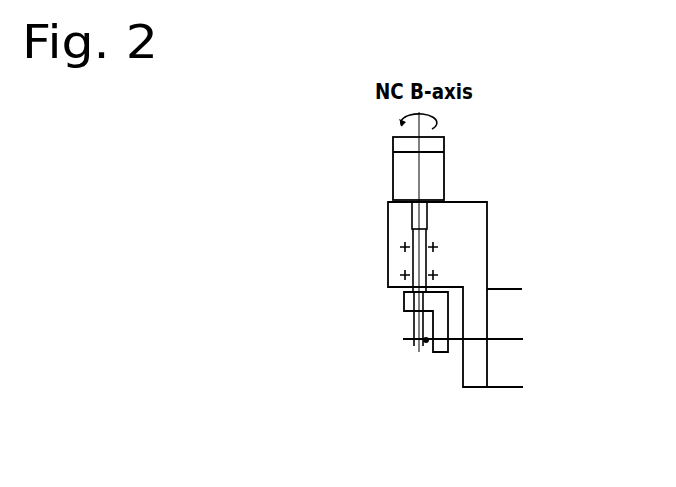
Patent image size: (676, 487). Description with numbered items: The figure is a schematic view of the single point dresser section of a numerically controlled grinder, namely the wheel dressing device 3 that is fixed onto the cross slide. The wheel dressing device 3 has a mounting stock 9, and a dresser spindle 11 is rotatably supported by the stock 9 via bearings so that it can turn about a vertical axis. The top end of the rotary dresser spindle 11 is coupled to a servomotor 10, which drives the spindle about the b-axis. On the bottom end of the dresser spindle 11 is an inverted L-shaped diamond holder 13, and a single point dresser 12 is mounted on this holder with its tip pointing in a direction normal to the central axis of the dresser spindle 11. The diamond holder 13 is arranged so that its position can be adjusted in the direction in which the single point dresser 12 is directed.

The wheel dressing device 3 is at (388, 233).
The mounting stock 9 is at (470, 248).
The servomotor 10 is at (432, 165).
The dresser spindle 11 is at (413, 262).
The single point dresser 12 is at (418, 345).
The diamond holder 13 is at (408, 302).